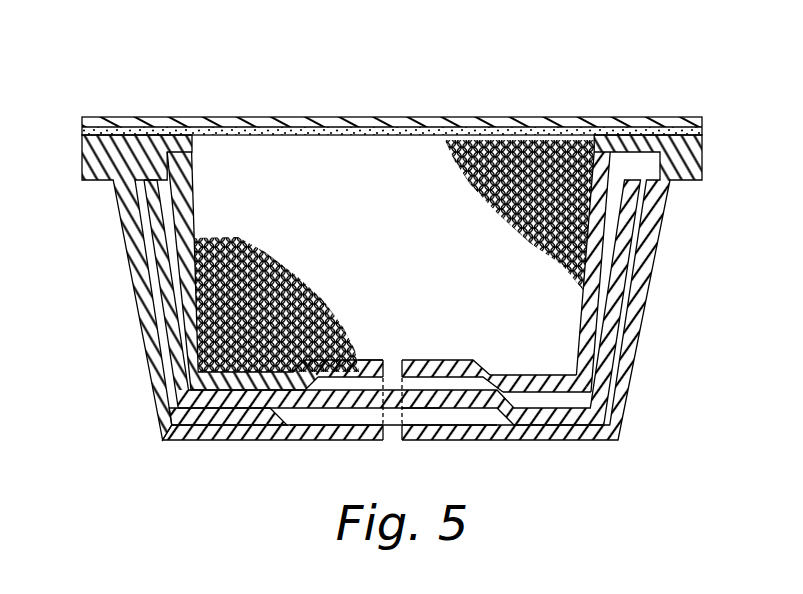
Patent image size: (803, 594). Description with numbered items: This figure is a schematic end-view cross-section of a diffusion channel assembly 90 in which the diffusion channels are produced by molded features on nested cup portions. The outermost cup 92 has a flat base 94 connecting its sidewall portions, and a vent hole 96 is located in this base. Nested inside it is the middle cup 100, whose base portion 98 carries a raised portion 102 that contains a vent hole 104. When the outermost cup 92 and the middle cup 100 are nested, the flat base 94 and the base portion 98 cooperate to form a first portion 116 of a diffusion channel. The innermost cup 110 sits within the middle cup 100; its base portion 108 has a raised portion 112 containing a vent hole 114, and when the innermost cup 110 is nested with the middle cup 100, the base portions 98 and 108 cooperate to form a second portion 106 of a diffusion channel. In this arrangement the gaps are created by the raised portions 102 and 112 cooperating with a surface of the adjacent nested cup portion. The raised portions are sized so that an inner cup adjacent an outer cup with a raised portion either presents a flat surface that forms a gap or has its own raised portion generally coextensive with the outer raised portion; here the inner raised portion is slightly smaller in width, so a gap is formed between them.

The diffusion channel assembly 90 is at (583, 56).
The outermost cup 92 is at (132, 268).
The flat base 94 is at (585, 443).
The vent hole 96 is at (388, 441).
The base portion 98 is at (215, 413).
The middle cup 100 is at (157, 213).
The raised portion 102 is at (453, 398).
The vent hole 104 is at (413, 410).
The second portion of a diffusion channel 106 is at (447, 378).
The base portion 108 is at (531, 375).
The innermost cup 110 is at (180, 172).
The raised portion 112 is at (374, 357).
The vent hole 114 is at (393, 360).
The first portion of a diffusion channel 116 is at (317, 413).